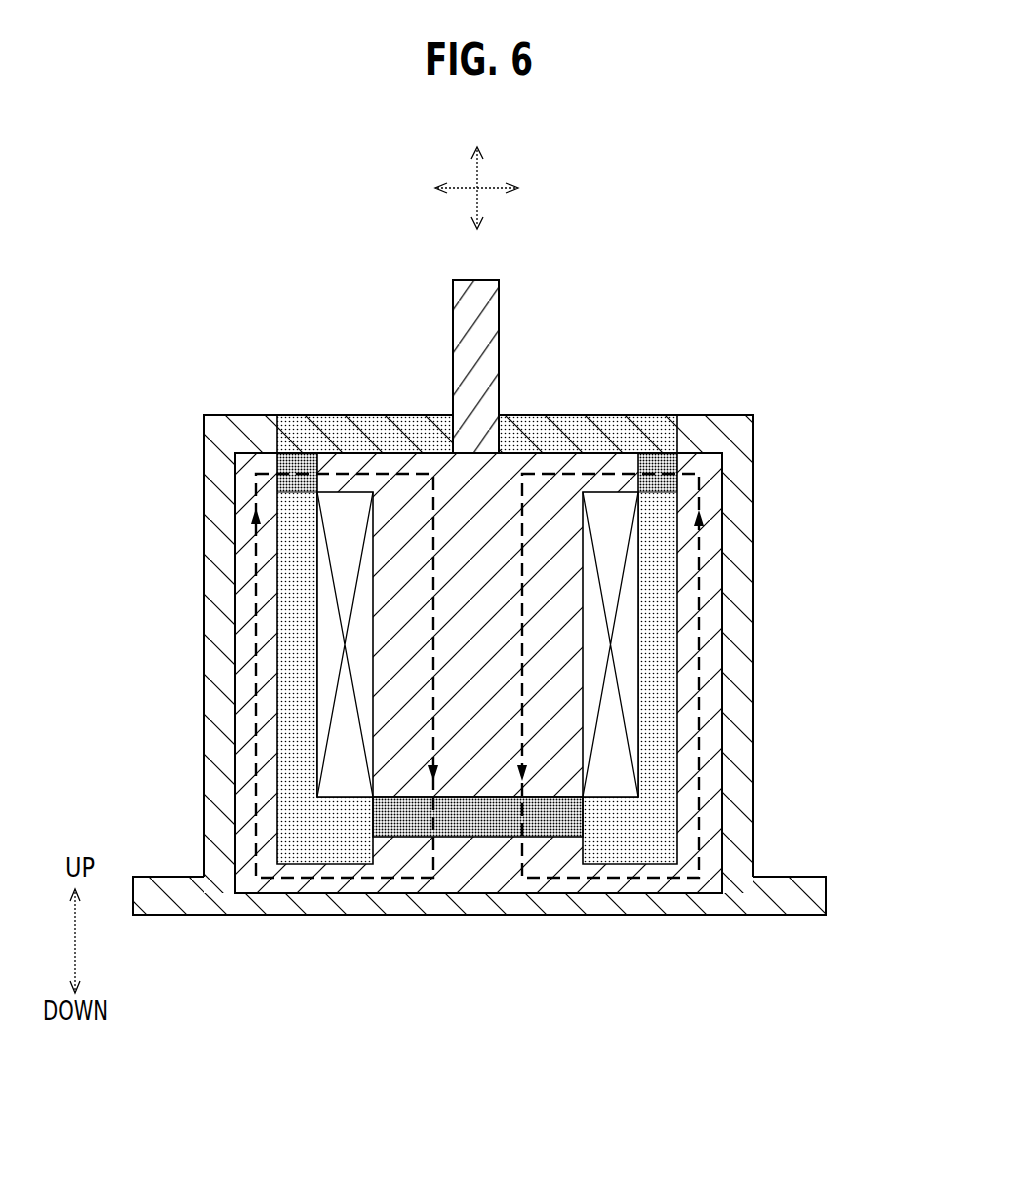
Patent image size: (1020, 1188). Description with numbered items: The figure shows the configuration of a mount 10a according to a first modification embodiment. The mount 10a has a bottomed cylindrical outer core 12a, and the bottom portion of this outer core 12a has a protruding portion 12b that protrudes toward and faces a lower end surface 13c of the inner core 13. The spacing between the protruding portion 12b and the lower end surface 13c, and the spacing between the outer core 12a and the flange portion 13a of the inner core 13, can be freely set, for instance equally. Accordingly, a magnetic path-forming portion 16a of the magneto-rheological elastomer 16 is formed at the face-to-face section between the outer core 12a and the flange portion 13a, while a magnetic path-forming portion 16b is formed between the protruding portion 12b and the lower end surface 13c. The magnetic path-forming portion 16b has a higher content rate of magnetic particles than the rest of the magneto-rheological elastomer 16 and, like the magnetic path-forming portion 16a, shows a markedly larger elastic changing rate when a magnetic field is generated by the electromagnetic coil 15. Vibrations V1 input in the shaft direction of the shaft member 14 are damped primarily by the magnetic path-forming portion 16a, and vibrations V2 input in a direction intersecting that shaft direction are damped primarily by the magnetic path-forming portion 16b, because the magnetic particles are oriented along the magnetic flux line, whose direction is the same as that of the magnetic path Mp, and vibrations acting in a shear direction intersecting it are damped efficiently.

The mount 10a is at (688, 302).
The outer core 12a is at (240, 710).
The protruding portion 12b is at (492, 824).
The inner core 13 is at (560, 566).
The flange portion 13a is at (348, 463).
The lower end surface 13c is at (483, 806).
The shaft member 14 is at (499, 310).
The electromagnetic coil 15 is at (600, 718).
The magneto-rheological elastomer 16 is at (577, 415).
The magnetic path-forming portion 16a is at (300, 460).
The magnetic path-forming portion 16b is at (402, 823).
The magnetic path Mp is at (258, 625).
The vibrations V1 is at (476, 172).
The vibrations V2 is at (496, 189).